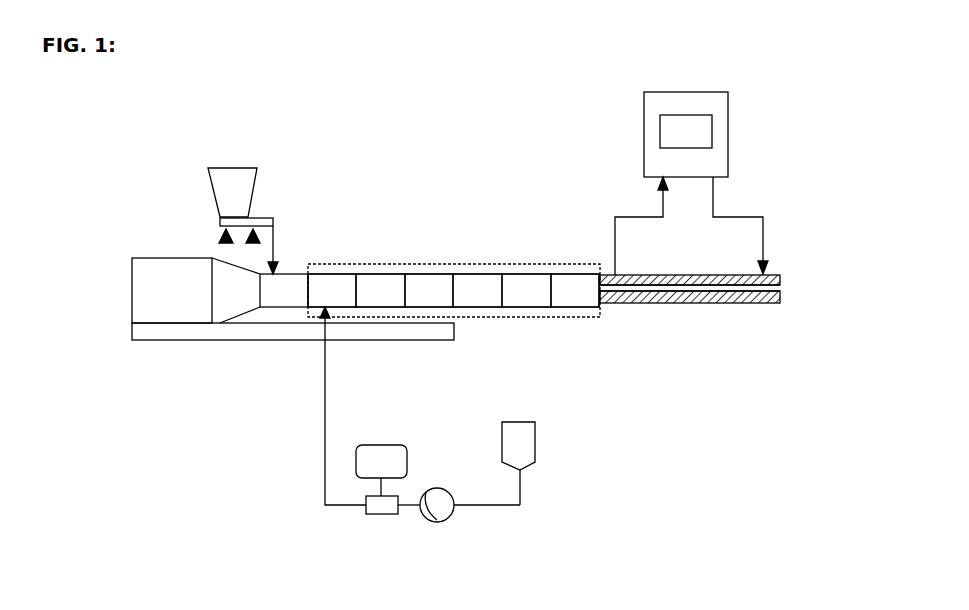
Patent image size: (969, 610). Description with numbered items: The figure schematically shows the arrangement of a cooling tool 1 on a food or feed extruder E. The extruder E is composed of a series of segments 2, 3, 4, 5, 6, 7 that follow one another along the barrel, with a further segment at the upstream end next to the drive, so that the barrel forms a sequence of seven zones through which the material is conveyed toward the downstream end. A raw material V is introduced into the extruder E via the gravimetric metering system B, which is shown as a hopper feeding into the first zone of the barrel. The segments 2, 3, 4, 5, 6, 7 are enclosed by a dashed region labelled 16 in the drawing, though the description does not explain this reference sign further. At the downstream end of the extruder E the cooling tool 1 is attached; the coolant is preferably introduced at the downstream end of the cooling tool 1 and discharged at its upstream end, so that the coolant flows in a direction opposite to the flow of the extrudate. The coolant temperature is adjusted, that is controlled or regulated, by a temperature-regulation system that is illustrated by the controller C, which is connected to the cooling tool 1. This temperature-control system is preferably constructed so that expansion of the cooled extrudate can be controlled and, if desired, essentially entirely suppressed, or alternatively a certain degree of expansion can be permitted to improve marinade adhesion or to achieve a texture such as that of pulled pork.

The cooling tool 1 is at (456, 350).
The extruder segment 2 is at (332, 290).
The extruder segment 3 is at (380, 290).
The extruder segment 4 is at (429, 290).
The extruder segment 5 is at (477, 290).
The extruder segment 6 is at (526, 290).
The extruder segment 7 is at (575, 290).
The heated barrel section 16 is at (580, 285).
The gravimetric metering system B is at (371, 344).
The controller C is at (691, 173).
The extruder E is at (196, 280).
The raw material V is at (250, 150).